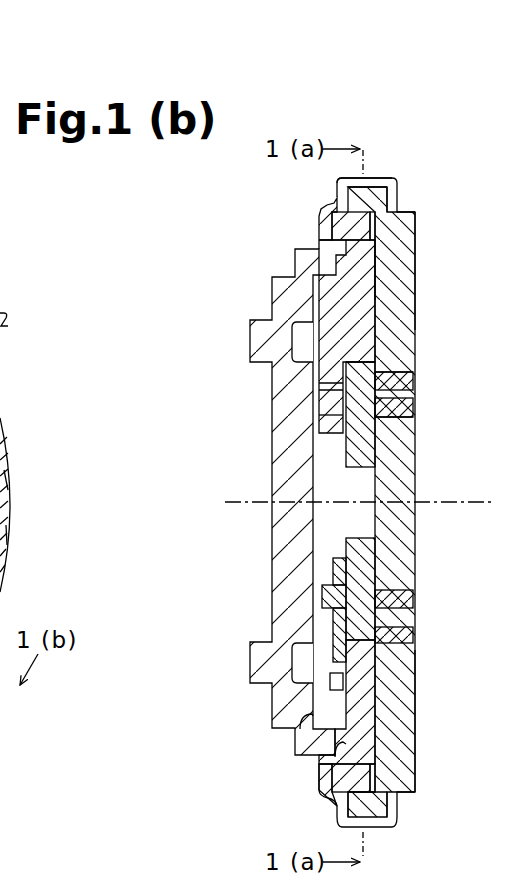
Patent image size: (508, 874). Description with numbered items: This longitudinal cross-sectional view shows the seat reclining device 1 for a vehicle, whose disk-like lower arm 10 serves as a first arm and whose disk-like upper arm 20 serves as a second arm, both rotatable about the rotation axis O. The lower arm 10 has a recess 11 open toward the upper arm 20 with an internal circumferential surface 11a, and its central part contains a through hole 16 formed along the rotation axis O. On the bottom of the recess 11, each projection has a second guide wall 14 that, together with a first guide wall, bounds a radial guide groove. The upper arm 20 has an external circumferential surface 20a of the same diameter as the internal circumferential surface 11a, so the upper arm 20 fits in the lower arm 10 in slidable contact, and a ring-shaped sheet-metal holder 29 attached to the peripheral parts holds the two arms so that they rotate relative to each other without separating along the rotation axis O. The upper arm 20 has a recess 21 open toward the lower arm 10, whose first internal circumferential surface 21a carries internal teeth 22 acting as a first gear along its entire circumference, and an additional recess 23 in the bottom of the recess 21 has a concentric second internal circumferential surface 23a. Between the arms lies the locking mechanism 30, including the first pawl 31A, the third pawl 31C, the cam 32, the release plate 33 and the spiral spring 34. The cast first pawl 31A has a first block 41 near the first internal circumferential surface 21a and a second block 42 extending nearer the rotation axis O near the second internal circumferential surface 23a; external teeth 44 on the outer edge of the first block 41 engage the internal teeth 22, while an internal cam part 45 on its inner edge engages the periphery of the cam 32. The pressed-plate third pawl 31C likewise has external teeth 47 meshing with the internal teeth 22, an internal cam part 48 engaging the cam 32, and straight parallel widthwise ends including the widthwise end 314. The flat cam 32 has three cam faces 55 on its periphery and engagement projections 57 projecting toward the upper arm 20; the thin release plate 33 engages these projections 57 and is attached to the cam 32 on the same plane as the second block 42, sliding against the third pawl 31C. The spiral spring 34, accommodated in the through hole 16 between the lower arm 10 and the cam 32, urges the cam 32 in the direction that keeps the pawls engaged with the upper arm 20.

The seat reclining device 1 is at (428, 191).
The lower arm 10 is at (405, 248).
The recess 11 is at (326, 210).
The internal circumferential surface 11a is at (377, 774).
The second guide wall 14 is at (8, 535).
The through hole 16 is at (398, 648).
The upper arm 20 is at (277, 283).
The external circumferential surface 20a is at (360, 210).
The recess 21 is at (374, 271).
The first internal circumferential surface 21a is at (338, 742).
The internal teeth 22 is at (377, 748).
The additional recess 23 is at (322, 304).
The second internal circumferential surface 23a is at (300, 719).
The holder 29 is at (376, 195).
The locking mechanism 30 is at (328, 665).
The first pawl 31A is at (415, 220).
The third pawl 31C is at (363, 702).
The cam 32 is at (368, 453).
The release plate 33 is at (333, 570).
The spiral spring 34 is at (413, 408).
The first block 41 is at (370, 359).
The second block 42 is at (330, 368).
The external teeth 44 is at (331, 229).
The internal cam part 45 is at (343, 398).
The external teeth 47 is at (344, 765).
The internal cam part 48 is at (355, 640).
The cam faces 55 is at (366, 338).
The engagement projections 57 is at (320, 603).
The widthwise end 314 is at (8, 479).
The rotation axis O is at (454, 503).